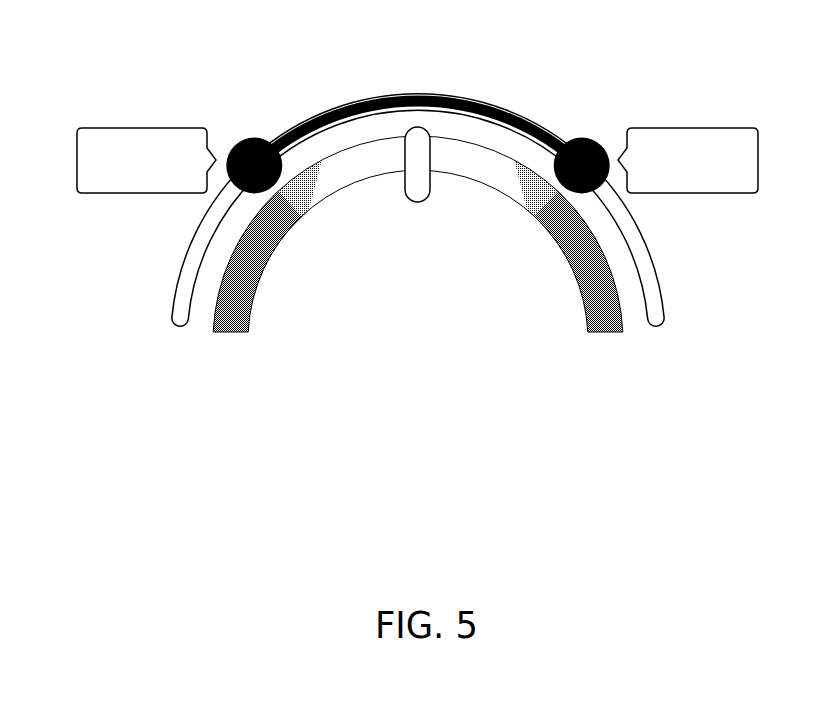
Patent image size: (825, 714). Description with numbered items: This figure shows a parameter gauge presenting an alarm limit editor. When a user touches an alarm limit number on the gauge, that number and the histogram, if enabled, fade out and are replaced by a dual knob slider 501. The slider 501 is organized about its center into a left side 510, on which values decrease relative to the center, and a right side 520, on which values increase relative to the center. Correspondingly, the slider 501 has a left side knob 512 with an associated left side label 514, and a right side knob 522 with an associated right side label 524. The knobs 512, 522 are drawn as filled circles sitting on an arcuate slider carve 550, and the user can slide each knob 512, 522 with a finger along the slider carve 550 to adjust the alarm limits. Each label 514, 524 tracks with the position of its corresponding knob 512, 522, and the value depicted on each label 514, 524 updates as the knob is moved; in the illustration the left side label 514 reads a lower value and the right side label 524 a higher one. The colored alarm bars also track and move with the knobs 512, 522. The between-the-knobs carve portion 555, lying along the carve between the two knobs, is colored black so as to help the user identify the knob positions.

The dual knob slider 501 is at (420, 219).
The left side 510 is at (104, 49).
The left side knob 512 is at (247, 137).
The left side label 514 is at (152, 128).
The right side 520 is at (741, 49).
The right side knob 522 is at (575, 135).
The right side label 524 is at (710, 128).
The slider carve 550 is at (179, 316).
The between-the-knobs carve portion 555 is at (512, 117).